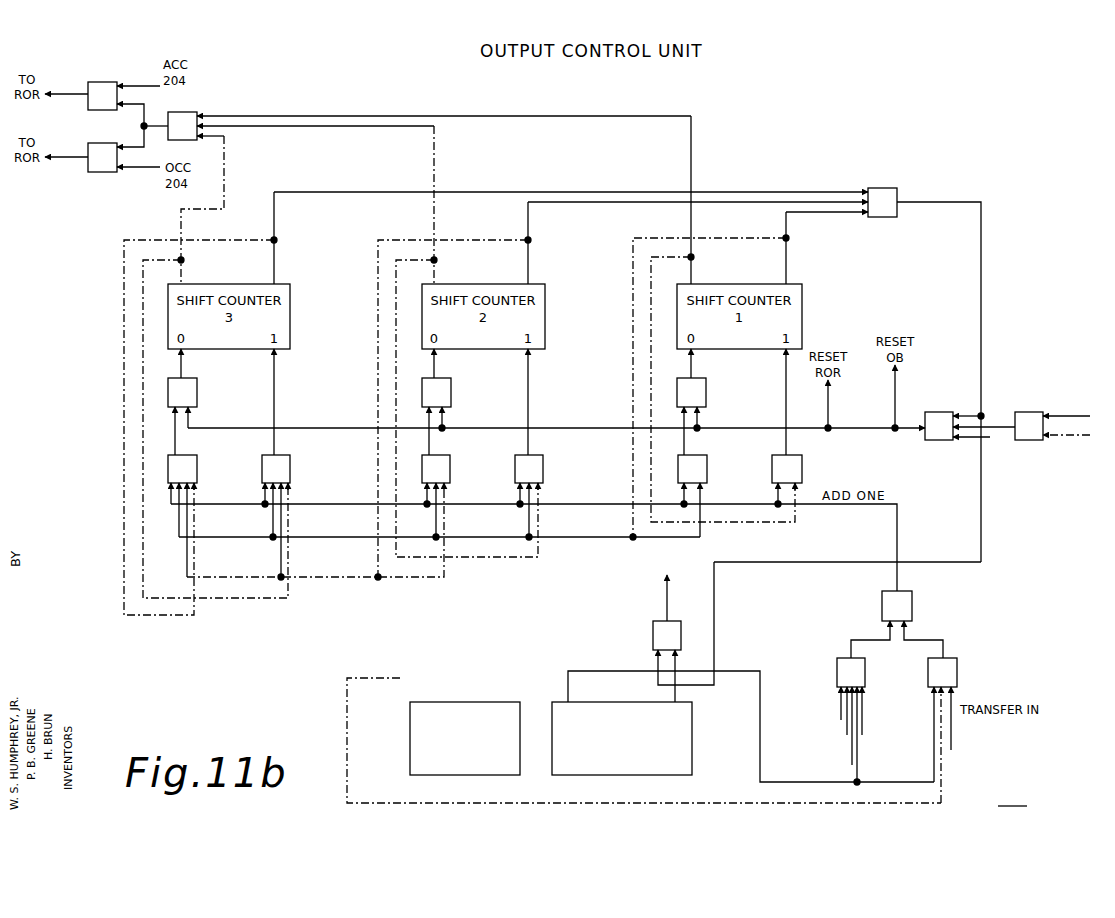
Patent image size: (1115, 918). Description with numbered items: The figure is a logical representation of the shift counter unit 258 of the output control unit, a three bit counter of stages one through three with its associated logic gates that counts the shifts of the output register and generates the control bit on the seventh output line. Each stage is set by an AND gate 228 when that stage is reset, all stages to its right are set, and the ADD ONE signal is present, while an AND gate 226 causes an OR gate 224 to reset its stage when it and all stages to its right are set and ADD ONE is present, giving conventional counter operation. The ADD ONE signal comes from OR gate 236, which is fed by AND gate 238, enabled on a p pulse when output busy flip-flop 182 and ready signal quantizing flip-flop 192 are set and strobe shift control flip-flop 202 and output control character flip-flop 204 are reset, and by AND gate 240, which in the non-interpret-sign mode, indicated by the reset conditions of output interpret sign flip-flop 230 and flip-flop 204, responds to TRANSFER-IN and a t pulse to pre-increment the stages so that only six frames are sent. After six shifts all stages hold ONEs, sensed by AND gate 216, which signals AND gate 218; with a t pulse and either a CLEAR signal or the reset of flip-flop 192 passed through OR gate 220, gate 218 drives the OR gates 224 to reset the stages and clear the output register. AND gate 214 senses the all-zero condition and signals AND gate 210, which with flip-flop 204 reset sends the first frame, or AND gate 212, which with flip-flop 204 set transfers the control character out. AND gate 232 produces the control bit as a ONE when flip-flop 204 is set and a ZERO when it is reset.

The output control character flip-flop 204 is at (642, 738).
The AND gate 210 is at (117, 80).
The AND gate 212 is at (114, 174).
The AND gate 214 is at (199, 112).
The AND gate 216 is at (897, 192).
The AND gate 218 is at (940, 412).
The OR gate 220 is at (1030, 412).
The OR gate 224 is at (236, 394).
The AND gate 226 is at (197, 468).
The AND gate 228 is at (291, 468).
The output interpret sign flip-flop 230 is at (478, 700).
The AND gate 232 is at (646, 636).
The OR gate 236 is at (912, 610).
The AND gate 238 is at (833, 666).
The AND gate 240 is at (957, 673).
The output busy flip-flop 182 is at (809, 712).
The ready signal quantizing flip-flop 192 is at (810, 737).
The strobe shift control flip-flop 202 is at (879, 726).
The shift counter unit 258 is at (1008, 788).